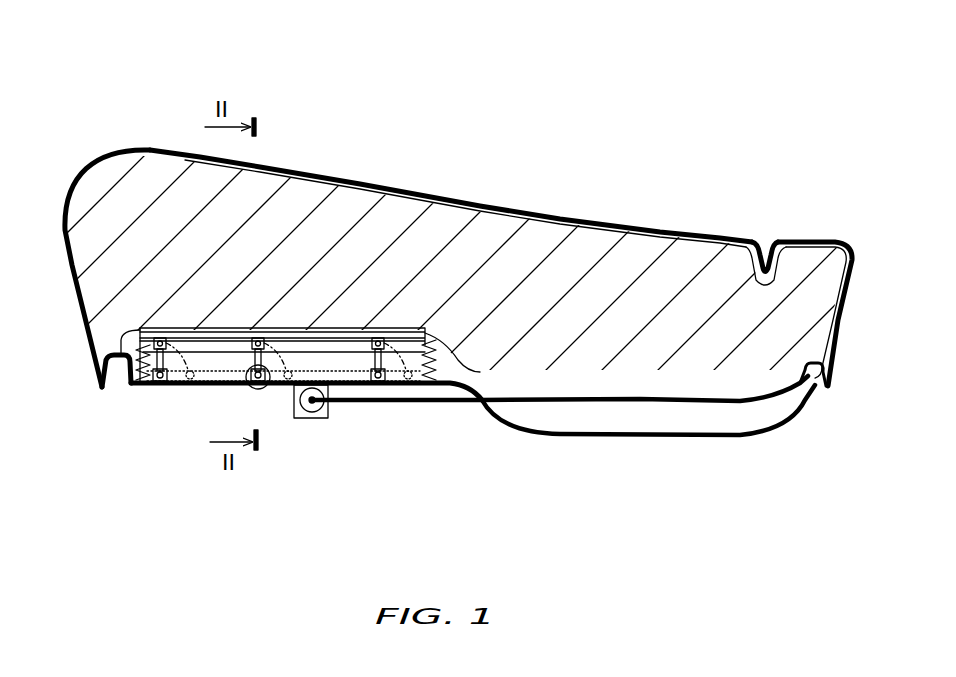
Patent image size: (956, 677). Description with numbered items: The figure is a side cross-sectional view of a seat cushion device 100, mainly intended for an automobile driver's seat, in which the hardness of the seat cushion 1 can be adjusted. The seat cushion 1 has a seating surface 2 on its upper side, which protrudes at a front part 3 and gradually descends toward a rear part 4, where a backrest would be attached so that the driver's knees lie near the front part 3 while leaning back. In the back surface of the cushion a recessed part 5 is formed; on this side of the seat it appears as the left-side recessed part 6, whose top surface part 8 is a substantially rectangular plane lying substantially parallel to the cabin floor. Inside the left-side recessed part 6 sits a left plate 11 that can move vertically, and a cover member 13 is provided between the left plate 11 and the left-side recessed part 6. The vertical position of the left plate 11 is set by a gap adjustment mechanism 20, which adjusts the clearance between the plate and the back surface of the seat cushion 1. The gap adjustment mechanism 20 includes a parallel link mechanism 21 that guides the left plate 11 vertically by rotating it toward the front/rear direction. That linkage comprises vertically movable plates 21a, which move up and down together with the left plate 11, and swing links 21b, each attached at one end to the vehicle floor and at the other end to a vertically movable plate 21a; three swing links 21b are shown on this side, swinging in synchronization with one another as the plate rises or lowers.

The seat cushion device 100 is at (790, 98).
The seat cushion 1 is at (475, 250).
The seating surface 2 is at (557, 220).
The front part 3 is at (190, 147).
The rear part 4 is at (720, 232).
The recessed part 5 is at (461, 453).
The left-side recessed part 6 is at (125, 398).
The top surface part 8 is at (198, 378).
The left plate 11 is at (310, 340).
The cover member 13 is at (363, 330).
The gap adjustment mechanism 20 is at (365, 392).
The parallel link mechanism 21 is at (124, 318).
The vertically movable plate 21a is at (120, 343).
The swing link 21b is at (158, 385).